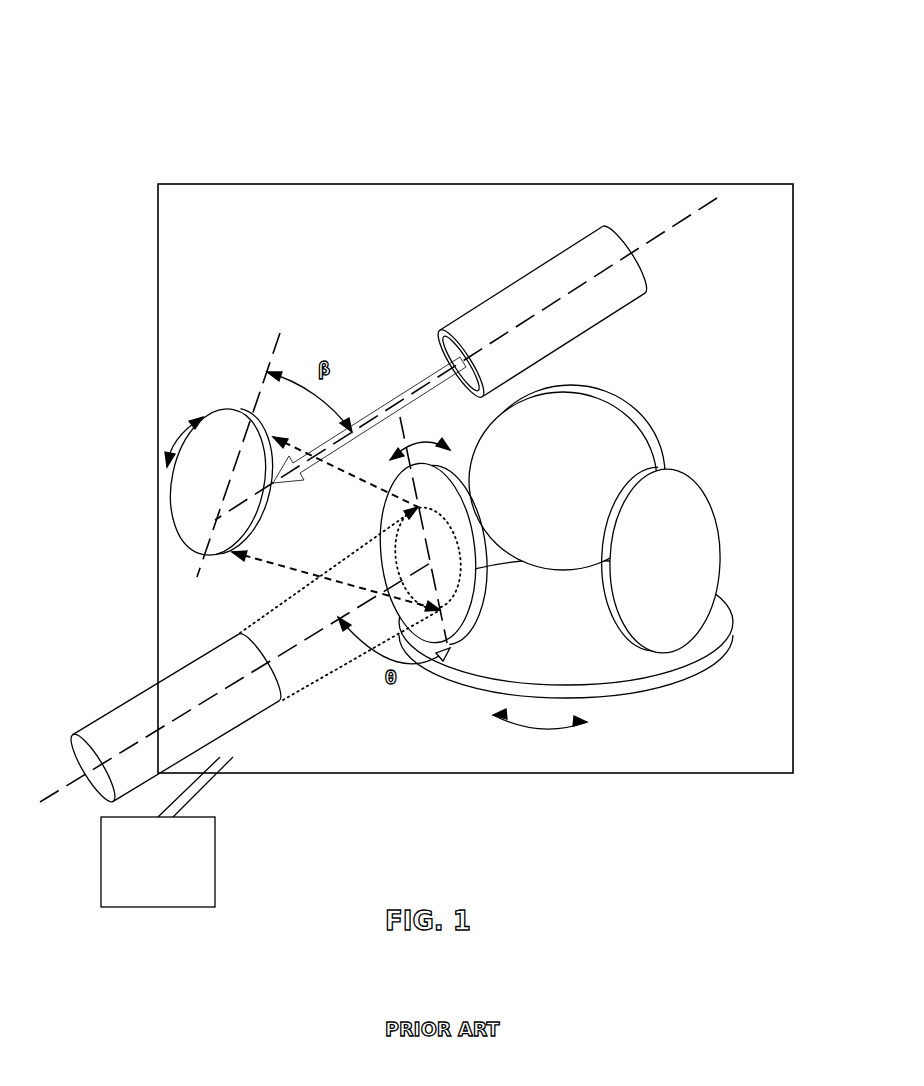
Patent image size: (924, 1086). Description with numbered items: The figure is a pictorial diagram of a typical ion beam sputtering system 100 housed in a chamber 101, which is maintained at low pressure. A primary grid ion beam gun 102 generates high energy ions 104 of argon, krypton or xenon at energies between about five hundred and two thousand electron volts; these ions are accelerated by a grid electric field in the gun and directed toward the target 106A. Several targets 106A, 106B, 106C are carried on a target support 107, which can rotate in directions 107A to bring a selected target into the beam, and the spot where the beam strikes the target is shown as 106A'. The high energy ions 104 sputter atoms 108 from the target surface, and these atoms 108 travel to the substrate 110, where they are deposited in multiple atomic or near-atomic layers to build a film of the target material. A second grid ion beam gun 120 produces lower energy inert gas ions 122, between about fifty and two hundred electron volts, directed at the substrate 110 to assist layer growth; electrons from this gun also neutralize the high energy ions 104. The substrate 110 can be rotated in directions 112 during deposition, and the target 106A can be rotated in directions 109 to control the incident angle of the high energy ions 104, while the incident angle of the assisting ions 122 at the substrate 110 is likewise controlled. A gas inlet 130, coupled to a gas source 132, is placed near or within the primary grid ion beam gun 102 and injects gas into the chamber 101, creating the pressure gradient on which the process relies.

The ion beam sputtering system 100 is at (187, 98).
The chamber 101 is at (795, 320).
The primary grid ion beam gun 102 is at (127, 700).
The high energy ions 104 is at (360, 655).
The target 106A is at (474, 532).
The beam spot on first mirror 106A' is at (476, 559).
The target 106B is at (625, 441).
The target 106C is at (678, 517).
The target support 107 is at (620, 673).
The rotation directions of target support 107A is at (567, 722).
The sputtered atoms 108 is at (275, 565).
The rotation directions of target 109 is at (430, 448).
The substrate 110 is at (172, 507).
The rotation directions of substrate 112 is at (172, 450).
The second grid ion beam gun 120 is at (528, 276).
The lower energy inert gas ions 122 is at (380, 392).
The gas inlet 130 is at (230, 758).
The gas source 132 is at (101, 876).